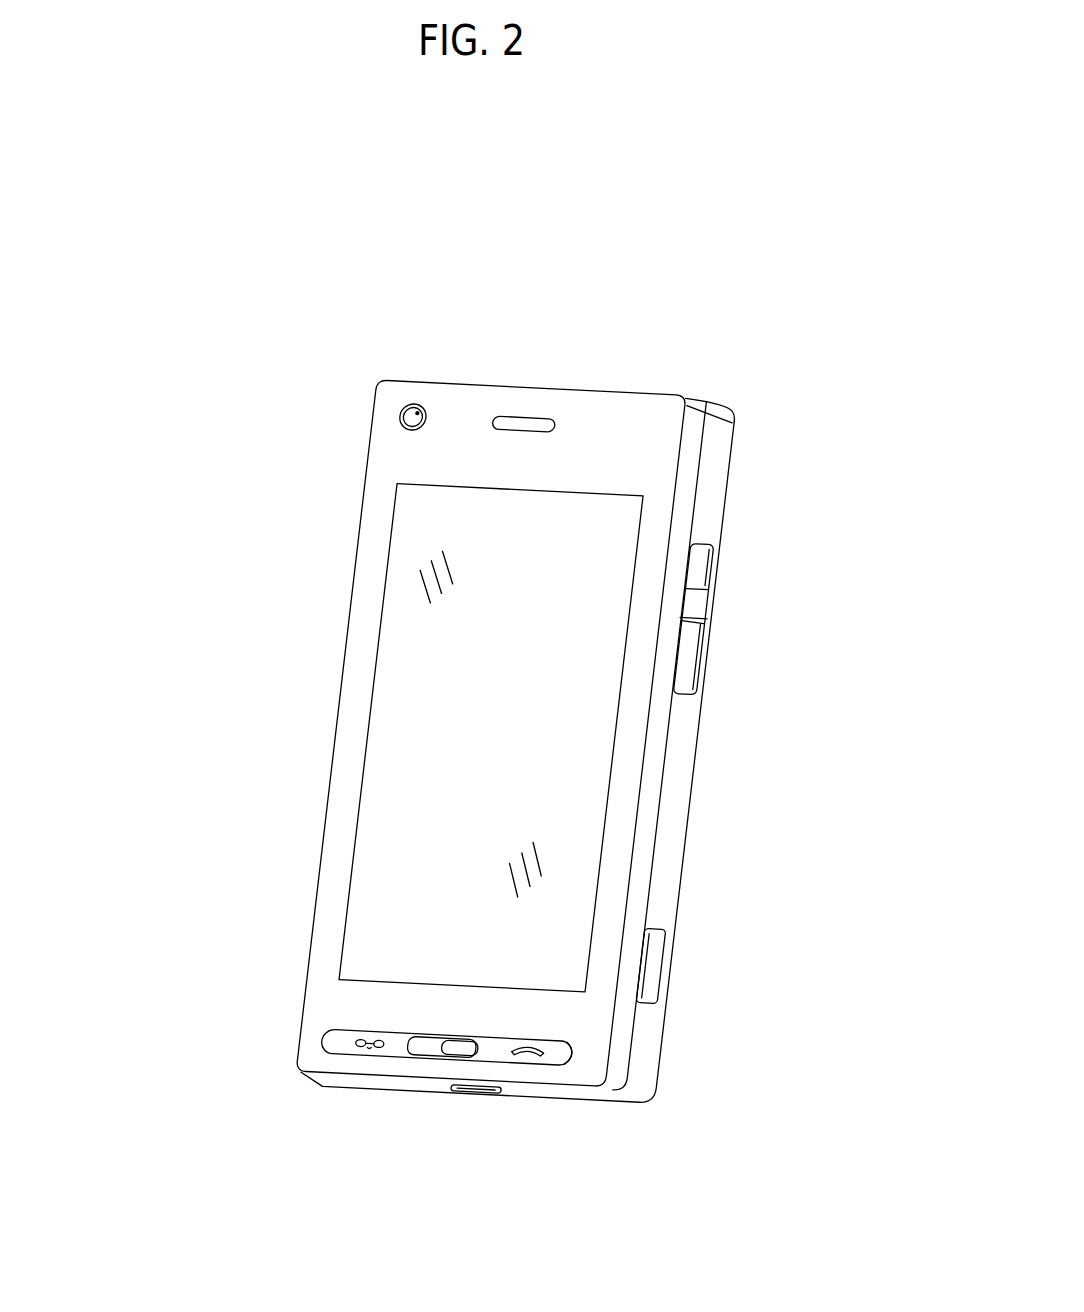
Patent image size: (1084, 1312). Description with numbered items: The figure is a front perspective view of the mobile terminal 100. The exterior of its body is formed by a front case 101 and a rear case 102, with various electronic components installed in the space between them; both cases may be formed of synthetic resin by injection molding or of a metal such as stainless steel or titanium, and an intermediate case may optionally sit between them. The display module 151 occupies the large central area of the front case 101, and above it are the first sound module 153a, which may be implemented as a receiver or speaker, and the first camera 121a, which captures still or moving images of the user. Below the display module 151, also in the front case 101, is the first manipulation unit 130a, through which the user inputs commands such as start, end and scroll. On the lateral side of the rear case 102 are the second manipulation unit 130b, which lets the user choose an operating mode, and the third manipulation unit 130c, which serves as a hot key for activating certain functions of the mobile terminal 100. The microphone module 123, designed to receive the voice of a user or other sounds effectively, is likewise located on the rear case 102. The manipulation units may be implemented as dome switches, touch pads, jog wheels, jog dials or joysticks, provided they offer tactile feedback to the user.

The mobile terminal 100 is at (498, 668).
The front case 101 is at (693, 397).
The rear case 102 is at (717, 457).
The first camera 121a is at (403, 400).
The first sound module 153a is at (522, 417).
The display module 151 is at (398, 715).
The first manipulation unit 130a is at (360, 1027).
The second manipulation unit 130b is at (703, 608).
The third manipulation unit 130c is at (663, 957).
The microphone module 123 is at (478, 1095).